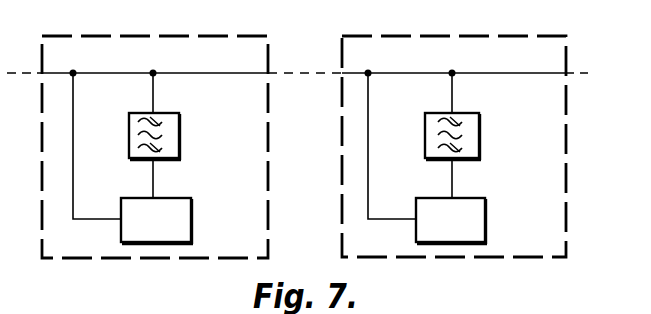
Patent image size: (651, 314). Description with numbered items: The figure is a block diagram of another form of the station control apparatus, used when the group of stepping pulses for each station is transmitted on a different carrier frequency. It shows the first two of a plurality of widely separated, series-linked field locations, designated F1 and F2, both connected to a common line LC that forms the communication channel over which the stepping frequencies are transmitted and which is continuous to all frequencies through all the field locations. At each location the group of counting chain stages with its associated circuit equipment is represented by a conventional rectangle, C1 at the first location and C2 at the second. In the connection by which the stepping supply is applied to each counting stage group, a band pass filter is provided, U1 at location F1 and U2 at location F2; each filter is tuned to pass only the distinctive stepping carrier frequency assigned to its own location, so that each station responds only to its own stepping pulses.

The common line / bus conductor LC is at (320, 69).
The first field location F1 is at (155, 147).
The second field location F2 is at (454, 146).
The band pass filter U1 is at (178, 136).
The band pass filter U2 is at (476, 136).
The counting chain stage group C1 is at (157, 221).
The counting chain stage group C2 is at (451, 221).